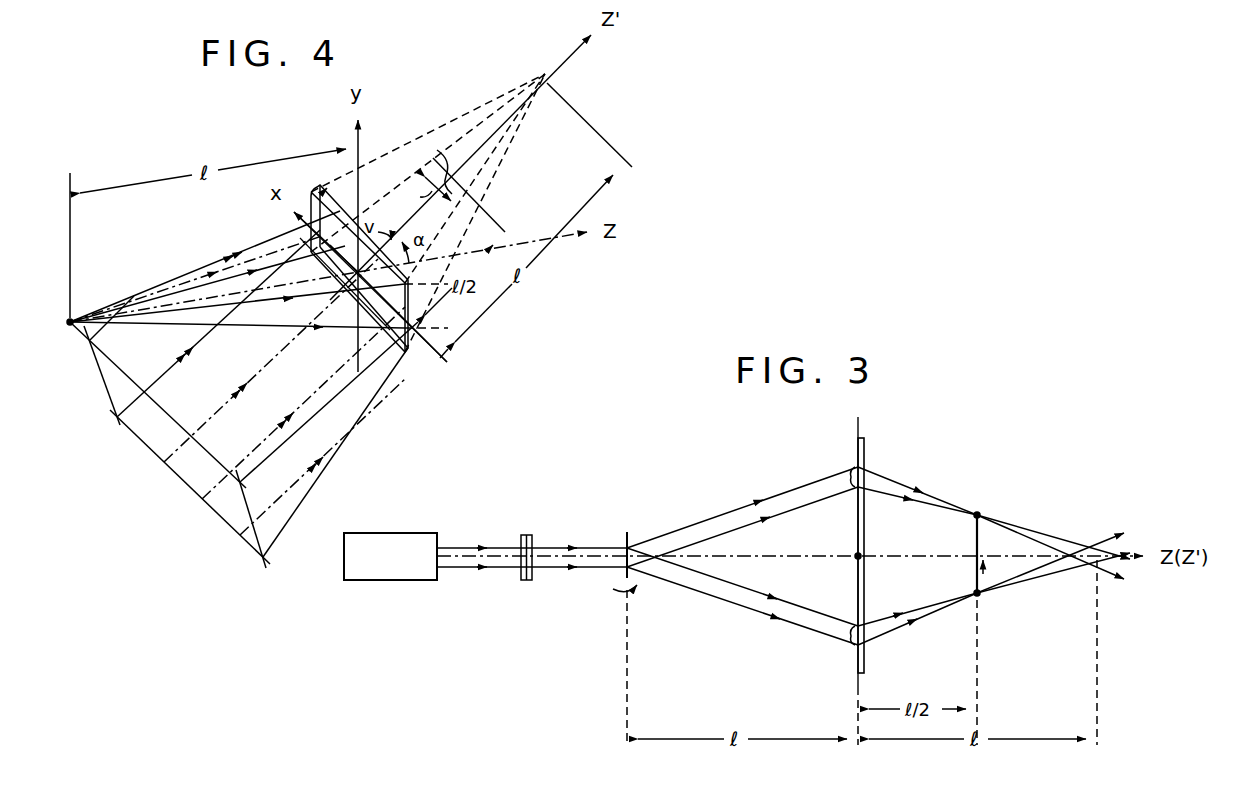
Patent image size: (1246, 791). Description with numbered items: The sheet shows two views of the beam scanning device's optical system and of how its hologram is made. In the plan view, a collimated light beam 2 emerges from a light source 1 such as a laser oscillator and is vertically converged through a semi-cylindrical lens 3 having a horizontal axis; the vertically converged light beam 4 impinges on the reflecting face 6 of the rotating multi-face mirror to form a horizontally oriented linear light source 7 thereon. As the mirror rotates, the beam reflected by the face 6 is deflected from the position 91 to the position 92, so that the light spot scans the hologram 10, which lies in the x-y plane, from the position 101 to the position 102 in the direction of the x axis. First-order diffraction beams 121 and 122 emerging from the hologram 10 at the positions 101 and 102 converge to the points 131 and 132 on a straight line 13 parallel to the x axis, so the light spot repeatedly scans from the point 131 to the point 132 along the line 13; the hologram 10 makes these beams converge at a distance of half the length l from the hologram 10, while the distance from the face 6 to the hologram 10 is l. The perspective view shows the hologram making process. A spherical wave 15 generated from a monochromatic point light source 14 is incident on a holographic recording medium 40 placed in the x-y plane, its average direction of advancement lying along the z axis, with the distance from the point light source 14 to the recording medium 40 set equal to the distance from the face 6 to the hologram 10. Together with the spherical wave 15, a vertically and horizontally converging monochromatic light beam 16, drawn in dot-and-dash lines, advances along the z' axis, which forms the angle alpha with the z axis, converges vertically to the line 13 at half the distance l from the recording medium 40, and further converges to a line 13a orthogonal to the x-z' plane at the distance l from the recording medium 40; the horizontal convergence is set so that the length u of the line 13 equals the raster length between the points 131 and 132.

In FIG. 3, the light source 1 is at (388, 540).
In FIG. 3, the collimated light beam 2 is at (461, 547).
In FIG. 3, the semi-cylindrical lens 3 is at (522, 534).
In FIG. 3, the vertically converged light beam 4 is at (556, 547).
In FIG. 3, the reflecting face 6 is at (629, 544).
In FIG. 3, the linear light source 7 is at (624, 566).
In FIG. 3, the beam position 92 is at (785, 493).
In FIG. 3, the beam position 91 is at (762, 608).
In FIG. 3, the hologram 10 is at (866, 441).
In FIG. 3, the hologram position 102 is at (847, 476).
In FIG. 3, the hologram position 101 is at (847, 641).
In FIG. 3, the first-order diffraction beam 122 is at (903, 491).
In FIG. 3, the first-order diffraction beam 121 is at (898, 625).
In FIG. 4, the straight line 13 is at (443, 152).
In FIG. 3, the straight line 13 is at (976, 539).
In FIG. 3, the convergence point 132 is at (979, 516).
In FIG. 3, the convergence point 131 is at (980, 597).
In FIG. 4, the convergence line 13a is at (543, 72).
In FIG. 4, the monochromatic point light source 14 is at (73, 318).
In FIG. 4, the spherical wave 15 is at (153, 297).
In FIG. 4, the converging monochromatic light beam 16 is at (302, 482).
In FIG. 4, the holographic recording medium 40 is at (311, 206).